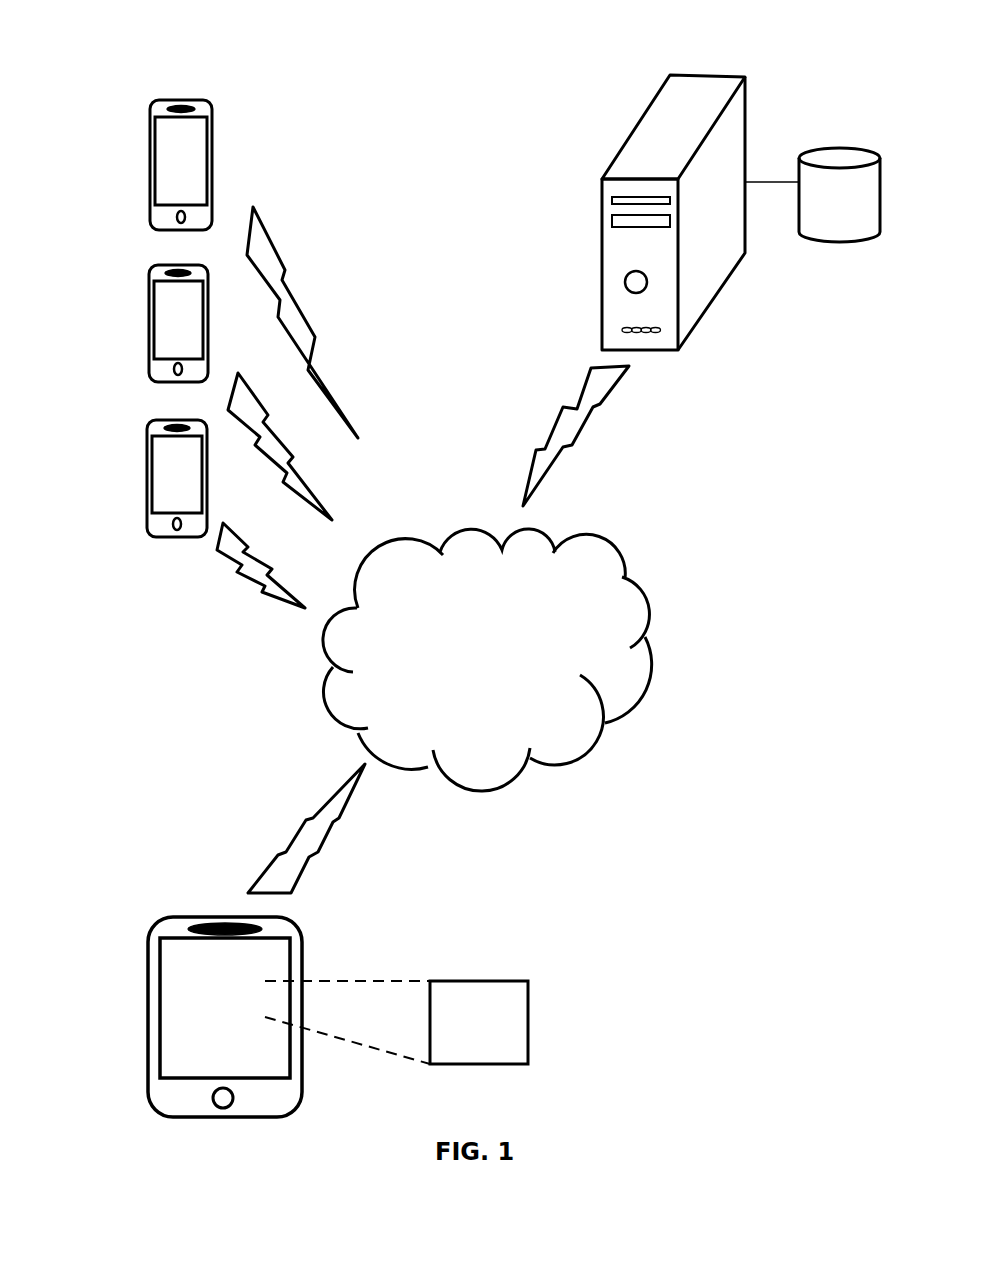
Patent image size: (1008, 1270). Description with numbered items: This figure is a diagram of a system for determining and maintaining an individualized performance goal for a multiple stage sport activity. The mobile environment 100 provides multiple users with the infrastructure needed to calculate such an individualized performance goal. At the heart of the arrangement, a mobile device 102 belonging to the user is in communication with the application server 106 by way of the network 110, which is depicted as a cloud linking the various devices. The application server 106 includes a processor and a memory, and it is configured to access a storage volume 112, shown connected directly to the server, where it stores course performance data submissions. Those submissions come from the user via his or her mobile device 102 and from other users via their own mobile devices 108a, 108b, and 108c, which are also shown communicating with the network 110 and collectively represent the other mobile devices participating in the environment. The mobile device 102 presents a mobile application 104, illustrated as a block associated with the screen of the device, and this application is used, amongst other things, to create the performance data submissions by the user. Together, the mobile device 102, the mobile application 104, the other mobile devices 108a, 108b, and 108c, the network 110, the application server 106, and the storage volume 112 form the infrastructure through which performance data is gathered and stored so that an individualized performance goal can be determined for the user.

The mobile environment 100 is at (215, 63).
The mobile device 102 is at (143, 1078).
The mobile application 104 is at (396, 1022).
The application server 106 is at (597, 178).
The mobile device 108a is at (147, 133).
The mobile device 108b is at (147, 298).
The mobile device 108c is at (147, 453).
The network 110 is at (487, 660).
The storage volume 112 is at (839, 195).